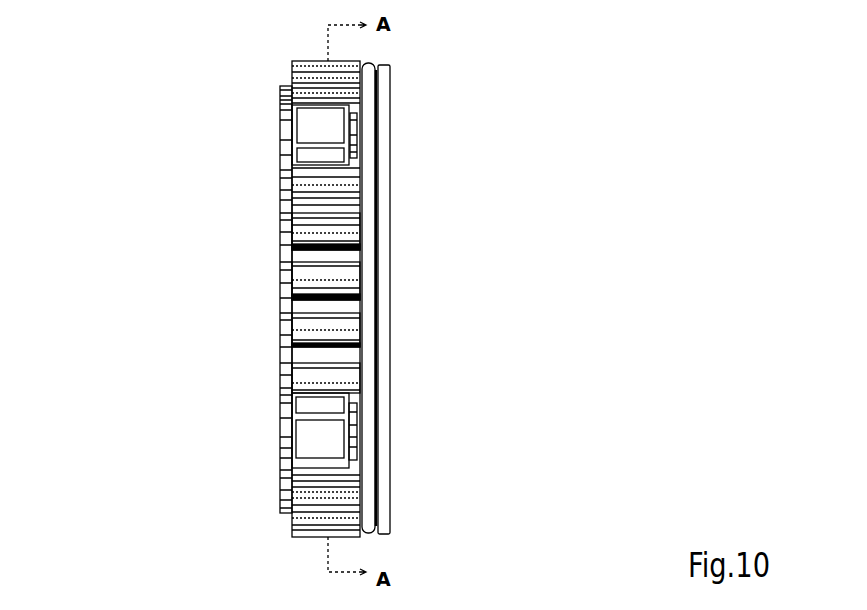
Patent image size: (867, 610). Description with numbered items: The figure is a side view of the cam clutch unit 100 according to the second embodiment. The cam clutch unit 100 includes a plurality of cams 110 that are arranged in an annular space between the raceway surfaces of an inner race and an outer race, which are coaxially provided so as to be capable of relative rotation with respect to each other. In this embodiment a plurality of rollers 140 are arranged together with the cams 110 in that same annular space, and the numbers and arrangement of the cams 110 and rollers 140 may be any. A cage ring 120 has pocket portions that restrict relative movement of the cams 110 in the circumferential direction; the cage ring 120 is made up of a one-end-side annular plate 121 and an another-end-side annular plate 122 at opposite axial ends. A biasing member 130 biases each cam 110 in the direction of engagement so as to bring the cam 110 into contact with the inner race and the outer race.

The cam clutch unit 100 is at (268, 149).
The cam 110 is at (298, 235).
The cage ring 120 is at (394, 192).
The one-end-side annular plate 121 is at (387, 442).
The another-end-side annular plate 122 is at (287, 285).
The biasing member 130 is at (368, 303).
The roller 140 is at (313, 443).